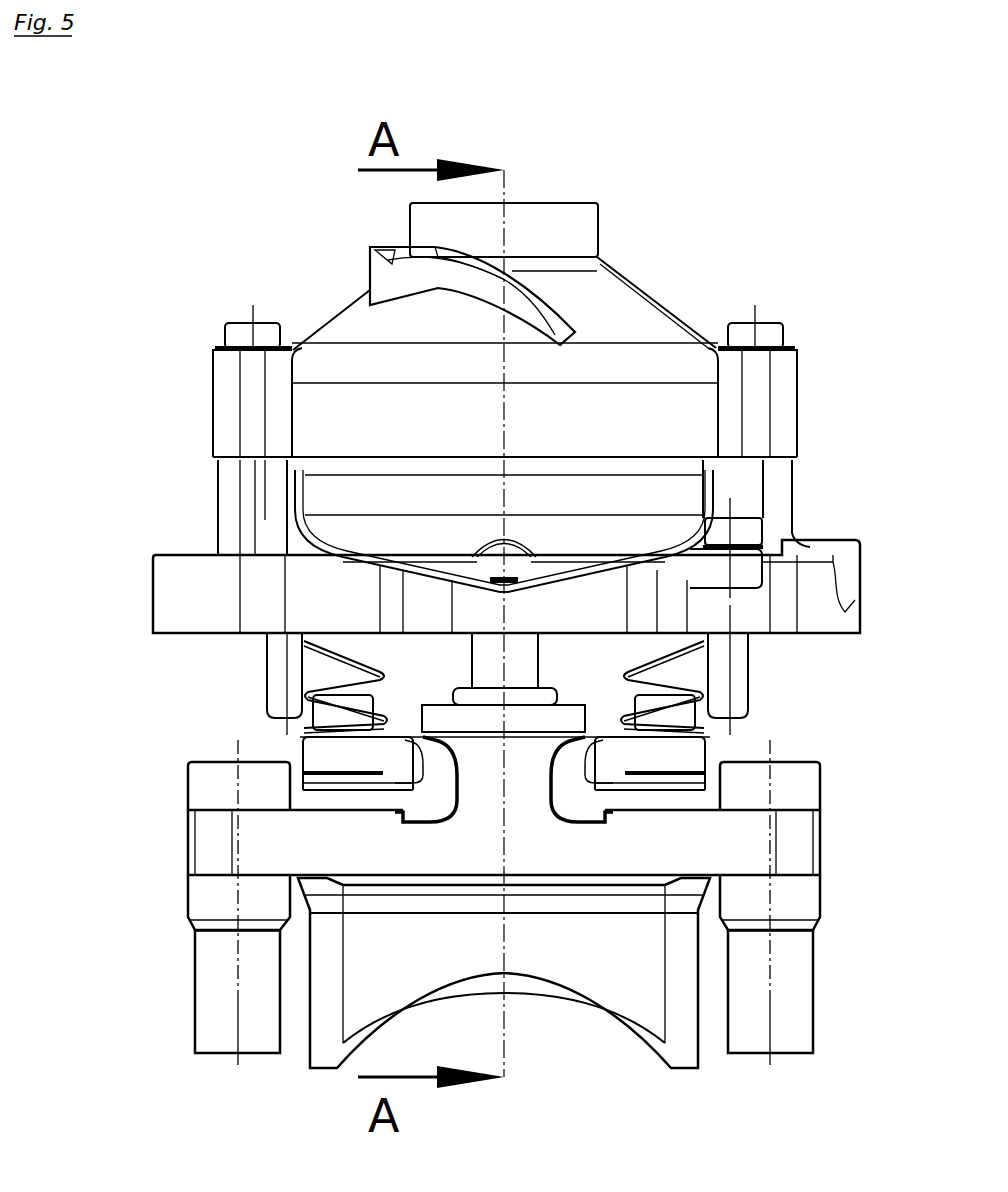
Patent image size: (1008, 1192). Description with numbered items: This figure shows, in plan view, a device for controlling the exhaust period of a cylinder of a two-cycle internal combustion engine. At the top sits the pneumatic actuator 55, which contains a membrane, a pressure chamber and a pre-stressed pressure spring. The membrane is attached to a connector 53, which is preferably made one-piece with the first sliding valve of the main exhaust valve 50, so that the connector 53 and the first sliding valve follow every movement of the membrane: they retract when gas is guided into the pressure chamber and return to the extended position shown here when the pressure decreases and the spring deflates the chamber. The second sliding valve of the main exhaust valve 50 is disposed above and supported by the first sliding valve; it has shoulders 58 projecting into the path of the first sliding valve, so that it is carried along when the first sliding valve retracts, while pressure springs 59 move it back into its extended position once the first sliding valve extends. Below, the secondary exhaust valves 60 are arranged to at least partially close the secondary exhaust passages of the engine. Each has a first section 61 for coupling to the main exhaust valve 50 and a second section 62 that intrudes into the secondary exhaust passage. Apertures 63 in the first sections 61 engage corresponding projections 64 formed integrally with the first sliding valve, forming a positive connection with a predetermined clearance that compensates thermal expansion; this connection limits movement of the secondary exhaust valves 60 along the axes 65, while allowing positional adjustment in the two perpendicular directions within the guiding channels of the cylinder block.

The main exhaust valve 50 is at (568, 1045).
The connector 53 is at (487, 660).
The pneumatic actuator 55 is at (700, 285).
The shoulders 58 is at (303, 752).
The pressure springs 59 is at (655, 655).
The secondary exhaust valves 60 is at (148, 887).
The first section 61 is at (202, 778).
The second section 62 is at (207, 973).
The apertures 63 is at (188, 823).
The projections 64 is at (215, 857).
The axes 65 is at (237, 1007).